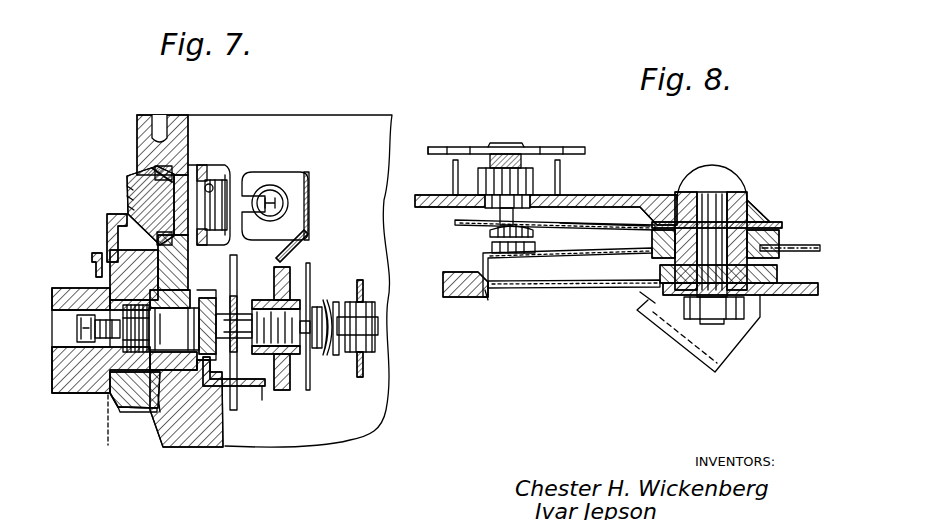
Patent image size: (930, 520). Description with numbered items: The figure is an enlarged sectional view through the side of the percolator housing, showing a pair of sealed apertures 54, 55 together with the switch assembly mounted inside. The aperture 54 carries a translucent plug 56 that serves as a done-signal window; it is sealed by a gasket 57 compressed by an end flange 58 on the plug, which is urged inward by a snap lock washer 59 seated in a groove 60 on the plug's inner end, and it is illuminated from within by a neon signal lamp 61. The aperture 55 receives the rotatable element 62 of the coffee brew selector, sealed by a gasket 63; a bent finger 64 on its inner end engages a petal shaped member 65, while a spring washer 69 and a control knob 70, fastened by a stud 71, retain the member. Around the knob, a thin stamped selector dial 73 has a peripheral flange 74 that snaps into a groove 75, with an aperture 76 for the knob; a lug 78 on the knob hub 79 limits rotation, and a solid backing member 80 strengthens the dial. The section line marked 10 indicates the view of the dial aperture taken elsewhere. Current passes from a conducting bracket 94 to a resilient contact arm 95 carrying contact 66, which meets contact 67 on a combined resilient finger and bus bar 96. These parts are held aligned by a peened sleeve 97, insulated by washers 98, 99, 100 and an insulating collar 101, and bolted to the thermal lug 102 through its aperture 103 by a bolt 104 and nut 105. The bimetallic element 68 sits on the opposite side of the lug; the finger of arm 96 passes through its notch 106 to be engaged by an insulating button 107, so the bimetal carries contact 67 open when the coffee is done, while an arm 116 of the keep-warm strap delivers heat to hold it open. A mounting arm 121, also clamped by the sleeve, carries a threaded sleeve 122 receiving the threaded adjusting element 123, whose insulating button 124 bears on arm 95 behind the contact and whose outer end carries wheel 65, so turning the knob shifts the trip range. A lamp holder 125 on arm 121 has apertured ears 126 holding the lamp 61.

In FIG. 7, the section line 10 is at (110, 209).
In FIG. 7, the aperture 54 is at (200, 168).
In FIG. 7, the aperture 55 is at (203, 292).
In FIG. 7, the translucent plug 56 is at (128, 194).
In FIG. 7, the gasket 57 is at (168, 178).
In FIG. 7, the end flange 58 is at (150, 183).
In FIG. 7, the snap lock washer 59 is at (208, 170).
In FIG. 7, the groove 60 is at (210, 185).
In FIG. 7, the signal lamp 61 is at (282, 192).
In FIG. 8, the signal lamp 61 is at (466, 172).
In FIG. 7, the rotatable element 62 is at (161, 328).
In FIG. 7, the gasket 63 is at (200, 414).
In FIG. 7, the bent finger 64 is at (261, 400).
In FIG. 7, the petal shaped member 65 is at (240, 280).
In FIG. 8, the petal shaped member 65 is at (470, 148).
In FIG. 7, the switch contact 66 is at (318, 305).
In FIG. 8, the switch contact 66 is at (490, 232).
In FIG. 7, the switch contact 67 is at (328, 304).
In FIG. 8, the switch contact 67 is at (492, 248).
In FIG. 7, the bimetallic element 68 is at (367, 373).
In FIG. 8, the bimetallic element 68 is at (556, 290).
In FIG. 7, the spring washer 69 is at (208, 387).
In FIG. 7, the control knob 70 is at (72, 280).
In FIG. 7, the stud 71 is at (76, 324).
In FIG. 7, the coffee brew selector dial 73 is at (107, 222).
In FIG. 7, the peripheral flange 74 is at (138, 412).
In FIG. 7, the groove 75 is at (155, 414).
In FIG. 7, the aperture 76 is at (97, 270).
In FIG. 7, the lug 78 is at (88, 288).
In FIG. 7, the hub 79 is at (70, 400).
In FIG. 7, the backing member 80 is at (108, 397).
In FIG. 8, the conducting bracket 94 is at (784, 226).
In FIG. 7, the contact arm 95 is at (310, 392).
In FIG. 8, the contact arm 95 is at (575, 225).
In FIG. 7, the combined resilient finger and bus bar 96 is at (336, 355).
In FIG. 8, the combined resilient finger and bus bar 96 is at (562, 254).
In FIG. 8, the sleeve 97 is at (752, 198).
In FIG. 8, the insulating washer 98 is at (780, 220).
In FIG. 8, the insulating washer 99 is at (780, 242).
In FIG. 8, the insulating washer 100 is at (781, 256).
In FIG. 8, the insulating collar 101 is at (679, 222).
In FIG. 8, the thermal lug 102 is at (642, 296).
In FIG. 8, the aperture 103 is at (777, 276).
In FIG. 8, the bolt 104 is at (711, 200).
In FIG. 8, the nut 105 is at (714, 318).
In FIG. 8, the notch 106 is at (500, 296).
In FIG. 7, the insulating button 107 is at (378, 348).
In FIG. 8, the insulating button 107 is at (443, 276).
In FIG. 8, the arm 116 is at (794, 298).
In FIG. 7, the mounting arm 121 is at (288, 392).
In FIG. 8, the mounting arm 121 is at (580, 196).
In FIG. 7, the threaded sleeve 122 is at (258, 300).
In FIG. 7, the threaded adjusting element 123 is at (257, 354).
In FIG. 8, the threaded adjusting element 123 is at (532, 150).
In FIG. 8, the insulating button 124 is at (455, 222).
In FIG. 7, the lamp holder 125 is at (306, 248).
In FIG. 7, the apertured ears 126 is at (276, 170).
In FIG. 8, the apertured ears 126 is at (561, 176).